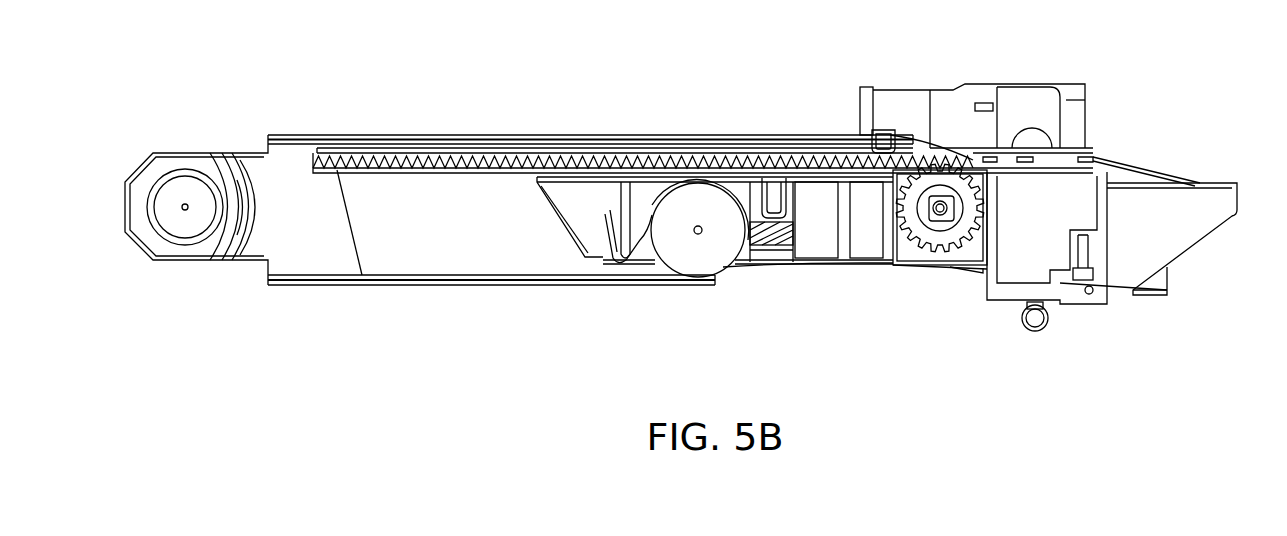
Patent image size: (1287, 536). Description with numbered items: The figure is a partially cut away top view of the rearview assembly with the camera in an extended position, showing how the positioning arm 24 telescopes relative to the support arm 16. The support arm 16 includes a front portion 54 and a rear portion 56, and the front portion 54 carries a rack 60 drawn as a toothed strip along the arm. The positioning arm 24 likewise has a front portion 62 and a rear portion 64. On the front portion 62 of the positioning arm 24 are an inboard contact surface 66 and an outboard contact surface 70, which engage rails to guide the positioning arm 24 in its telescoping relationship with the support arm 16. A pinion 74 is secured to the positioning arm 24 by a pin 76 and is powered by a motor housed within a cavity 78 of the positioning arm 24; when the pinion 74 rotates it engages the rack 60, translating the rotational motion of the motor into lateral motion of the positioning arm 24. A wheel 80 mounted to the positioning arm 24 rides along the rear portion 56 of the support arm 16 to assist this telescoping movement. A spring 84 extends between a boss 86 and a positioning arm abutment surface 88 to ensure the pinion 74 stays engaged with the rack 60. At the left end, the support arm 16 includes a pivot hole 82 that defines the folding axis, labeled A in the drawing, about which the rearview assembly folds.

The support arm 16 is at (320, 100).
The positioning arm 24 is at (1212, 166).
The front portion 54 is at (615, 120).
The rear portion 56 is at (540, 296).
The rack 60 is at (705, 135).
The front portion 62 is at (1090, 140).
The rear portion 64 is at (587, 272).
The inboard contact surface 66 is at (562, 150).
The outboard contact surface 70 is at (861, 151).
The pinion 74 is at (960, 274).
The pin 76 is at (924, 258).
The cavity 78 is at (1030, 218).
The wheel 80 is at (717, 248).
The pivot hole 82 is at (178, 182).
The spring 84 is at (795, 214).
The boss 86 is at (772, 176).
The positioning arm abutment surface 88 is at (777, 258).
The pivot axis A is at (185, 210).